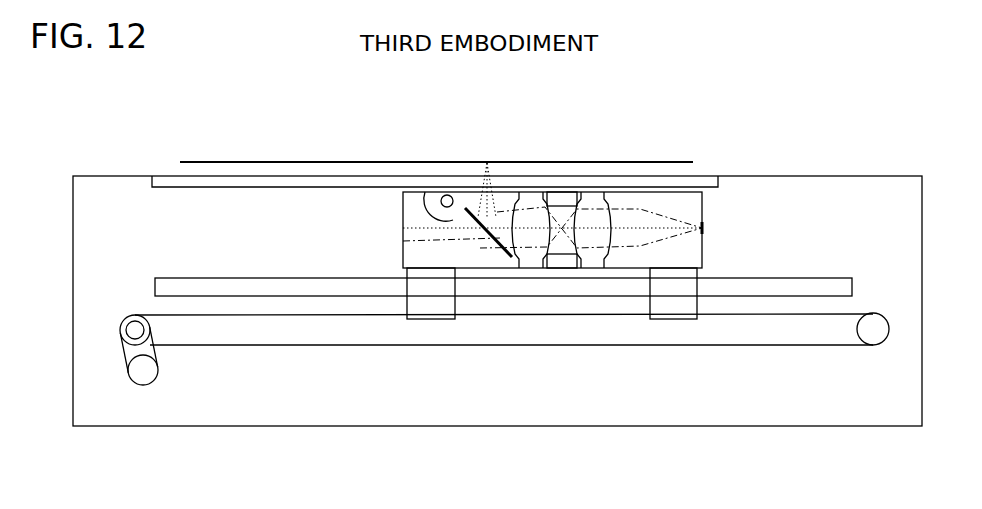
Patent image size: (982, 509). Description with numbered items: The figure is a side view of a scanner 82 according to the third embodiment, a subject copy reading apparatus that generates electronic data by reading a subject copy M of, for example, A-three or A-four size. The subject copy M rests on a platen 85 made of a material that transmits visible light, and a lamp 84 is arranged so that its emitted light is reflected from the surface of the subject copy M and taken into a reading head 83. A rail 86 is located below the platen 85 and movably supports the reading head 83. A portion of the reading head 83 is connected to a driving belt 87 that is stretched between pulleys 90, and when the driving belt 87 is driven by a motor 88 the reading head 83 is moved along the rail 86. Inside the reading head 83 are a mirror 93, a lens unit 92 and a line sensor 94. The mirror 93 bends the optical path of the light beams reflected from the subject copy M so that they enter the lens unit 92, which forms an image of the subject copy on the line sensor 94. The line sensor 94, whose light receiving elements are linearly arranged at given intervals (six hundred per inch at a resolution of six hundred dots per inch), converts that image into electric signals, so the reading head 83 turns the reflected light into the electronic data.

The scanner 82 is at (61, 115).
The subject copy M is at (204, 160).
The reading head 83 is at (702, 212).
The lamp 84 is at (447, 194).
The platen 85 is at (576, 190).
The rail 86 is at (841, 277).
The driving belt 87 is at (545, 347).
The motor 88 is at (143, 386).
The pulleys 90 is at (873, 346).
The lens unit 92 is at (612, 199).
The mirror 93 is at (403, 241).
The line sensor 94 is at (702, 228).